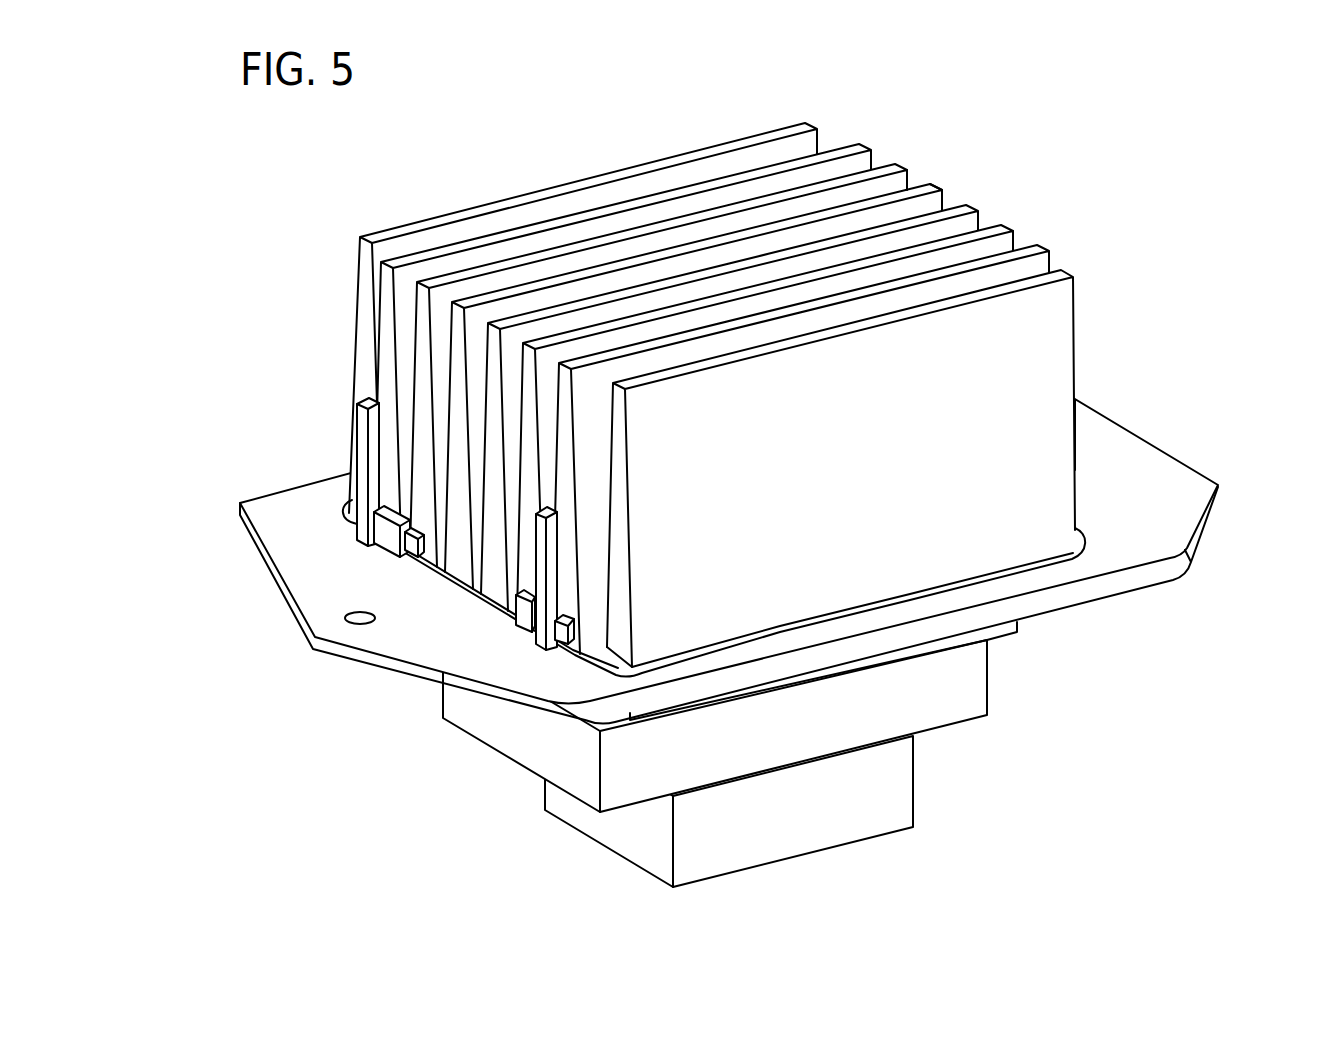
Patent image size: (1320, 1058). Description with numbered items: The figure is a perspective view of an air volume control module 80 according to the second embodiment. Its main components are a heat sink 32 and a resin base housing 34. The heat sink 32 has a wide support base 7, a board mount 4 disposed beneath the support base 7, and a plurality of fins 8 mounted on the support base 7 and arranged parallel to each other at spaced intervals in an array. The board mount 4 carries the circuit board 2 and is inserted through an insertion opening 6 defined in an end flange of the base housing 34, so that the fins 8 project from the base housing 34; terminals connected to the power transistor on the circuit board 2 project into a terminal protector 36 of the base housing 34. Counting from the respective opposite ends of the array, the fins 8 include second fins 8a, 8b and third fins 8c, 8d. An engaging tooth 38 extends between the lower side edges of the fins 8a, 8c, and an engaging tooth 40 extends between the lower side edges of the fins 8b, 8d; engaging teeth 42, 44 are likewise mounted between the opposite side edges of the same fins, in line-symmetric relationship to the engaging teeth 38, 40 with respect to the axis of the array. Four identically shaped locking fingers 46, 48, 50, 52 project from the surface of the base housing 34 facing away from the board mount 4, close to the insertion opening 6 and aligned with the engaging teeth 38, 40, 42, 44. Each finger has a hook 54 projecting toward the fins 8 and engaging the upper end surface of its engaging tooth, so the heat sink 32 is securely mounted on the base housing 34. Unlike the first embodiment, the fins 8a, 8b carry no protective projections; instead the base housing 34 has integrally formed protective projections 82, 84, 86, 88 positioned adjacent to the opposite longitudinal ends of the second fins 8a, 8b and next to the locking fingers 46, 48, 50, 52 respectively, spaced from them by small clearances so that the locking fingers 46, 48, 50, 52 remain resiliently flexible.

The air volume control module 80 is at (332, 170).
The fins 8 is at (790, 371).
The second fin 8a is at (851, 147).
The second fin 8b is at (1047, 247).
The third fin 8c is at (898, 163).
The third fin 8d is at (1006, 228).
The protective projection 86 is at (925, 180).
The protective projection 88 is at (1022, 245).
The locking finger 50 is at (947, 185).
The engaging tooth 42 is at (983, 157).
The locking finger 52 is at (1078, 437).
The engaging tooth 44 is at (1153, 431).
The heat sink 32 is at (1062, 376).
The base housing 34 is at (1169, 522).
The insertion opening 6 is at (787, 479).
The support base 7 is at (603, 641).
The board mount 4 is at (937, 703).
The circuit board 2 is at (730, 717).
The terminal protector 36 is at (801, 838).
The engaging tooth 38 is at (416, 550).
The engaging tooth 40 is at (566, 630).
The locking finger 46 is at (385, 534).
The locking finger 48 is at (528, 630).
The hook 54 is at (357, 610).
The protective projection 82 is at (368, 440).
The protective projection 84 is at (552, 547).